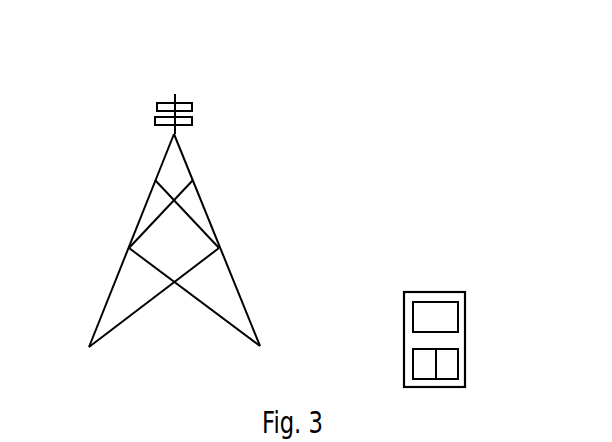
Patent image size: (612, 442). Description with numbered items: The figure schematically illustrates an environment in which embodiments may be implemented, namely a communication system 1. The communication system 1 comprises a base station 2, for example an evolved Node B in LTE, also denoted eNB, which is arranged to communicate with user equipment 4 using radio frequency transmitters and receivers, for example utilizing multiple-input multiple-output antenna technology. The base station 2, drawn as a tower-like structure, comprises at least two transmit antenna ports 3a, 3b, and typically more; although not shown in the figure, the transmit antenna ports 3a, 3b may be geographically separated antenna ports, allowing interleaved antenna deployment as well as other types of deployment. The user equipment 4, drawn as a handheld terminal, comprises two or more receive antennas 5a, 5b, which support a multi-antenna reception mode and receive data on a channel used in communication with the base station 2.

The communication system 1 is at (445, 63).
The base station 2 is at (113, 173).
The transmit antenna port 3a is at (192, 105).
The transmit antenna port 3b is at (192, 121).
The user equipment 4 is at (456, 294).
The receive antenna 5a is at (420, 372).
The receive antenna 5b is at (452, 370).